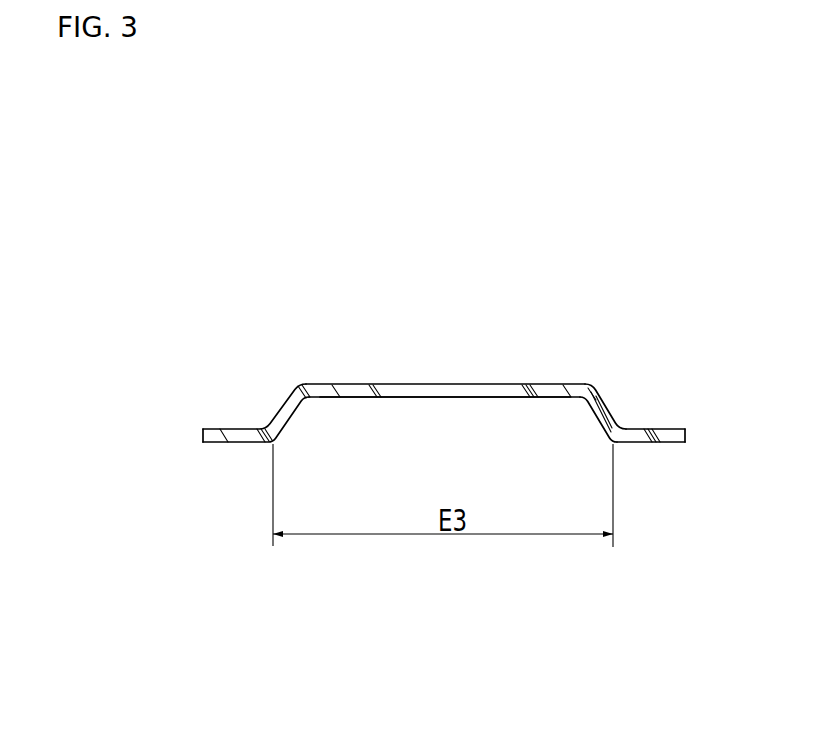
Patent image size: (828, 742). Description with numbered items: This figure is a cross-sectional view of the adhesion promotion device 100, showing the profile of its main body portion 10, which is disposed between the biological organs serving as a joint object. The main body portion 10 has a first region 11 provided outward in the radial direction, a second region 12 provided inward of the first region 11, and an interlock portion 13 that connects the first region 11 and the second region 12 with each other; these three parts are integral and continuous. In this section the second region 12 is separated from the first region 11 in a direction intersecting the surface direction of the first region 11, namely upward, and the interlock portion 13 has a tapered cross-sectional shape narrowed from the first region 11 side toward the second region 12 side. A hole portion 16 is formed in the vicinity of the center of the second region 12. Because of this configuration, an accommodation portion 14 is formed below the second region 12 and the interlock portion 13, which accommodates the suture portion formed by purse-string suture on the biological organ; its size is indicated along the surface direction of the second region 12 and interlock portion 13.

The adhesion promotion device 100 is at (125, 190).
The main body portion 10 is at (276, 394).
The first region 11 is at (671, 445).
The second region 12 is at (544, 383).
The interlock portion 13 is at (608, 406).
The accommodation portion 14 is at (365, 420).
The hole portion 16 is at (386, 385).